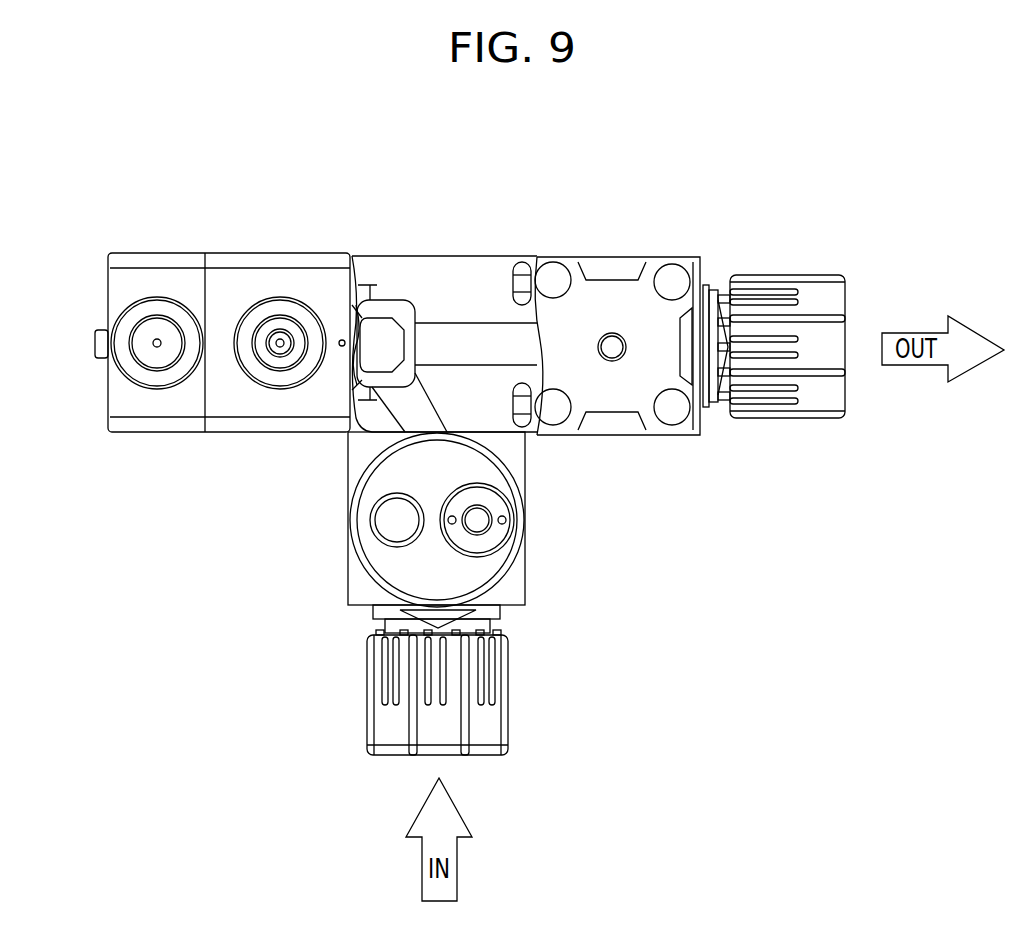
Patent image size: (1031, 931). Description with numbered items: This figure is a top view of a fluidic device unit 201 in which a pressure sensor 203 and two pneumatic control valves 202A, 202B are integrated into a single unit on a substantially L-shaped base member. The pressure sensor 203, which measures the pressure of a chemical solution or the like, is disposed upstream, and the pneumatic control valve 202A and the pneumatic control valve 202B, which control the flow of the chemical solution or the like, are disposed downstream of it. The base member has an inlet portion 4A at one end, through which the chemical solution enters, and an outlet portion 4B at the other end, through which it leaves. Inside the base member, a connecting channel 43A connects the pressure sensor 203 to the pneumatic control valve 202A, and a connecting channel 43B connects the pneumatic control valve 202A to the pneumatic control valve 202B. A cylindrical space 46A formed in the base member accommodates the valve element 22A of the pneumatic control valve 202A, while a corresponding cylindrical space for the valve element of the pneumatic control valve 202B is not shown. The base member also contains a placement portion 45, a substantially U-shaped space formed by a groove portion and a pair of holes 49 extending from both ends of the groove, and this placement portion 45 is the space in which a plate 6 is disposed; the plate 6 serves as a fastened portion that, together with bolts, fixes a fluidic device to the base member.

The fluidic device unit 201 is at (128, 138).
The pneumatic control valve 202A is at (231, 240).
The pneumatic control valve 202B is at (668, 246).
The pressure sensor 203 is at (522, 578).
The connecting channel 43A is at (400, 412).
The connecting channel 43B is at (518, 343).
The cylindrical space 46A is at (386, 305).
The valve element 22A is at (403, 340).
The plate 6 is at (516, 296).
The holes 49 is at (521, 262).
The placement portion 45 is at (522, 344).
The inlet portion 4A is at (365, 722).
The outlet portion 4B is at (826, 280).